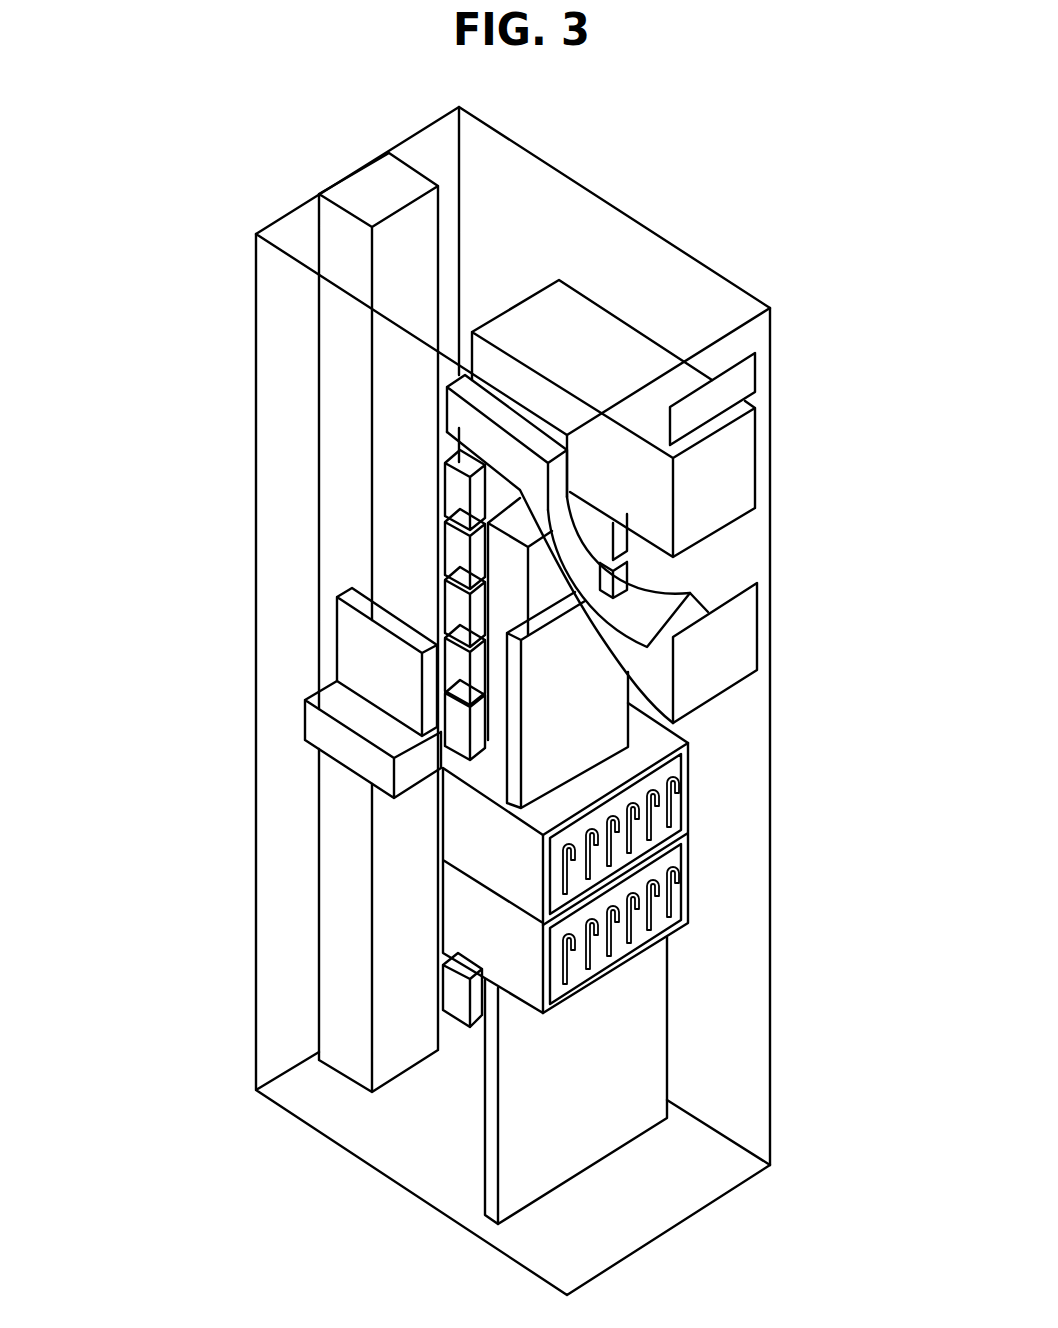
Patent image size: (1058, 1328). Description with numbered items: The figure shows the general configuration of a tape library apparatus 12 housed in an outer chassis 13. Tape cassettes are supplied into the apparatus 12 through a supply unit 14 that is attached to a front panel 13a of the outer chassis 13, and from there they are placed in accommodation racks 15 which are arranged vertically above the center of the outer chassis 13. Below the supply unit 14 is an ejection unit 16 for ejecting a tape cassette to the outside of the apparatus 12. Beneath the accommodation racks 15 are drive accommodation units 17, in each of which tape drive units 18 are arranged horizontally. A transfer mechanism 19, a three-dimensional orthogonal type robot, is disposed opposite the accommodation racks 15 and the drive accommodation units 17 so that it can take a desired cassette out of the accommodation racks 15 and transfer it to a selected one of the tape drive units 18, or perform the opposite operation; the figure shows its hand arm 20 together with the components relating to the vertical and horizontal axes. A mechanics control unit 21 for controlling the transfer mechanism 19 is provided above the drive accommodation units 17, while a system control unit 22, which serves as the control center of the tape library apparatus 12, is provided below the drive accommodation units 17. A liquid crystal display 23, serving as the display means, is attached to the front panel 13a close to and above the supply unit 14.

The tape library apparatus 12 is at (688, 160).
The outer chassis 13 is at (738, 288).
The front panel 13a is at (760, 338).
The supply unit 14 is at (743, 468).
The accommodation racks 15 is at (455, 495).
The ejection unit 16 is at (732, 658).
The drive accommodation units 17 is at (690, 777).
The tape drive units 18 is at (678, 806).
The transfer mechanism 19 is at (284, 806).
The hand arm 20 is at (357, 658).
The mechanics control unit 21 is at (607, 727).
The system control unit 22 is at (592, 1098).
The liquid crystal display 23 is at (743, 380).